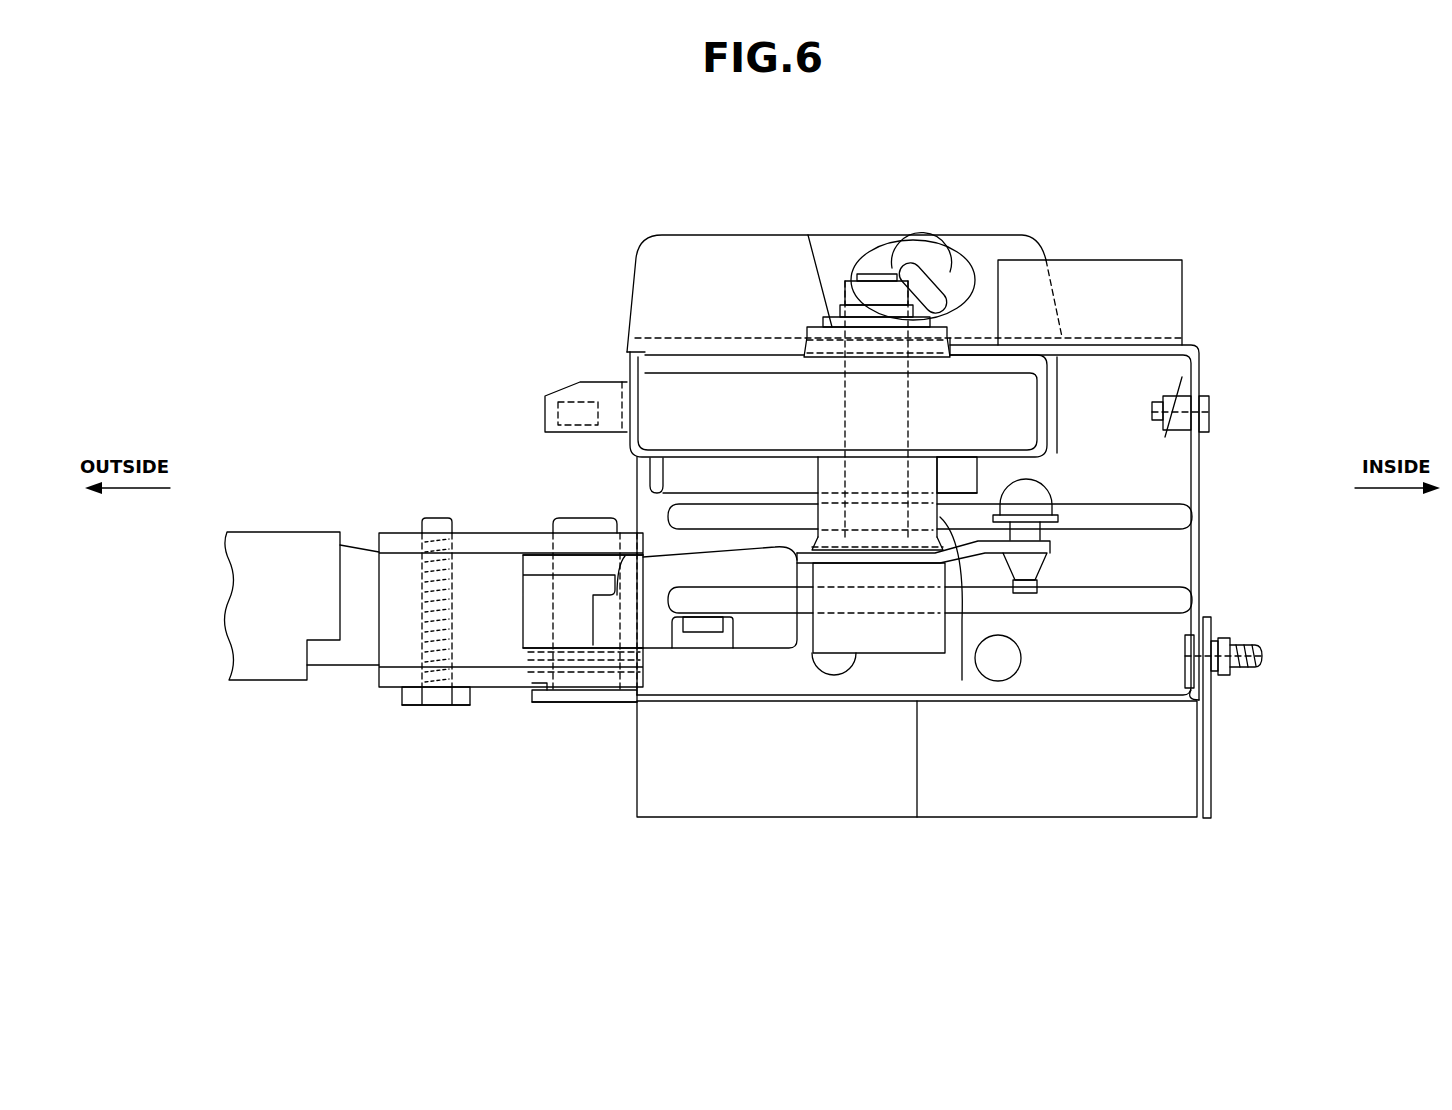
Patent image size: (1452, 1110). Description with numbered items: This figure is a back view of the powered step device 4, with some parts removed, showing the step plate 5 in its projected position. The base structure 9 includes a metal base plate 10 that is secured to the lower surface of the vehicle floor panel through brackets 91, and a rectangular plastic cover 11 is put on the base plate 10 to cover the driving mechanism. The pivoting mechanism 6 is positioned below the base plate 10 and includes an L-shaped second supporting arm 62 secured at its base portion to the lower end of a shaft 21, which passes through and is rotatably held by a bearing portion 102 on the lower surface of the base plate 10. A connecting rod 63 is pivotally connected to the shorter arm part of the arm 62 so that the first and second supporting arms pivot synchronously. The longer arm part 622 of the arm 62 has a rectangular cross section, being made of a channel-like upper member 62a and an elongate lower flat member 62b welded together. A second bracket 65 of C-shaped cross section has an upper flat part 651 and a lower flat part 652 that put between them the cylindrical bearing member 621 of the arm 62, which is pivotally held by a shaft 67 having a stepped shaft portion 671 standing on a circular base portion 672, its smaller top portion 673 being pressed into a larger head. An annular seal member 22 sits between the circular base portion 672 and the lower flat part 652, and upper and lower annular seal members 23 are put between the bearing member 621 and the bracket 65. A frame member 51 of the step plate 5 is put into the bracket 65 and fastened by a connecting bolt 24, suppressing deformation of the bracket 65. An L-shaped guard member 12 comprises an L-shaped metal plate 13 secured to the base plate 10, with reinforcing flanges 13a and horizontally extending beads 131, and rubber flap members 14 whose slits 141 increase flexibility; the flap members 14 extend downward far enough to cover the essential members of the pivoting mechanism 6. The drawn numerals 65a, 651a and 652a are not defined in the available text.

The step device 4 is at (972, 192).
The step plate 5 is at (302, 614).
The pivoting mechanism 6 is at (752, 672).
The base structure 9 is at (1220, 366).
The base plate 10 is at (1077, 388).
The cover 11 is at (730, 235).
The guard member 12 is at (973, 576).
The L-shaped metal plate 13 is at (972, 509).
The flange 13a is at (1190, 345).
The flap member 14 is at (968, 760).
The shaft 21 is at (912, 403).
The annular seal member 22 is at (535, 690).
The annular seal member 23 is at (513, 660).
The connecting bolt 24 is at (412, 706).
The frame member 51 is at (357, 540).
The second supporting arm 62 is at (810, 611).
The upper member 62a is at (668, 550).
The lower flat member 62b is at (703, 650).
The connecting rod 63 is at (1050, 492).
The second bracket 65 is at (466, 585).
The terminal bolt 65a is at (437, 518).
The shaft 67 is at (605, 766).
The bracket 91 is at (1140, 260).
The bearing portion 102 is at (962, 680).
The bead 131 is at (1195, 511).
The slit 141 is at (917, 787).
The bearing member 621 is at (522, 598).
The longer arm part 622 is at (572, 545).
The upper flat part 651 is at (466, 585).
The bolt head 651a is at (592, 533).
The lower flat part 652 is at (380, 682).
The terminal lower plate 652a is at (580, 672).
The stepped shaft portion 671 is at (505, 640).
The circular base portion 672 is at (615, 704).
The smaller top portion 673 is at (545, 527).